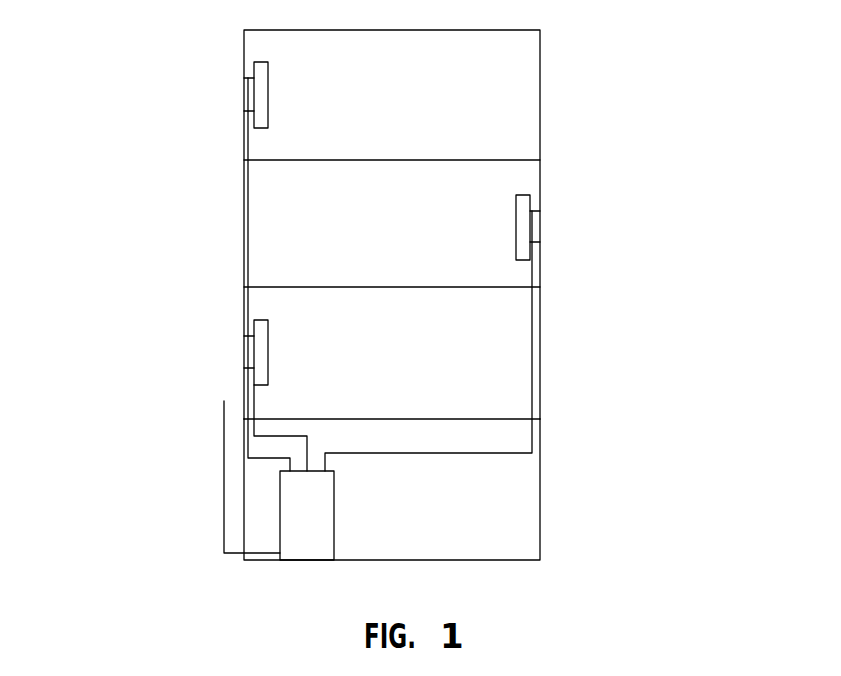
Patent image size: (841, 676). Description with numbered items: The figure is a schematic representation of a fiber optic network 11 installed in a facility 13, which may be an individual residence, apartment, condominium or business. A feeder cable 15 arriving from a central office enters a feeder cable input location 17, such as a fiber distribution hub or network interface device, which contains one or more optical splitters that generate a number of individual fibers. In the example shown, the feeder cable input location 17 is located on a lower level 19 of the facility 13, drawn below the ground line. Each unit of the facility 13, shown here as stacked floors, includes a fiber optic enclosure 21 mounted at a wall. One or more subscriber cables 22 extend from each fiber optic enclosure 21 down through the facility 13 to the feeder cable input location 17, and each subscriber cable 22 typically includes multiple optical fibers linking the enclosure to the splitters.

The fiber optic network 11 is at (82, 128).
The facility 13 is at (532, 60).
The feeder cable 15 is at (216, 447).
The feeder cable input location 17 is at (327, 510).
The lower level 19 is at (532, 502).
The fiber optic enclosure 21 is at (274, 100).
The subscriber cable 22 is at (240, 215).